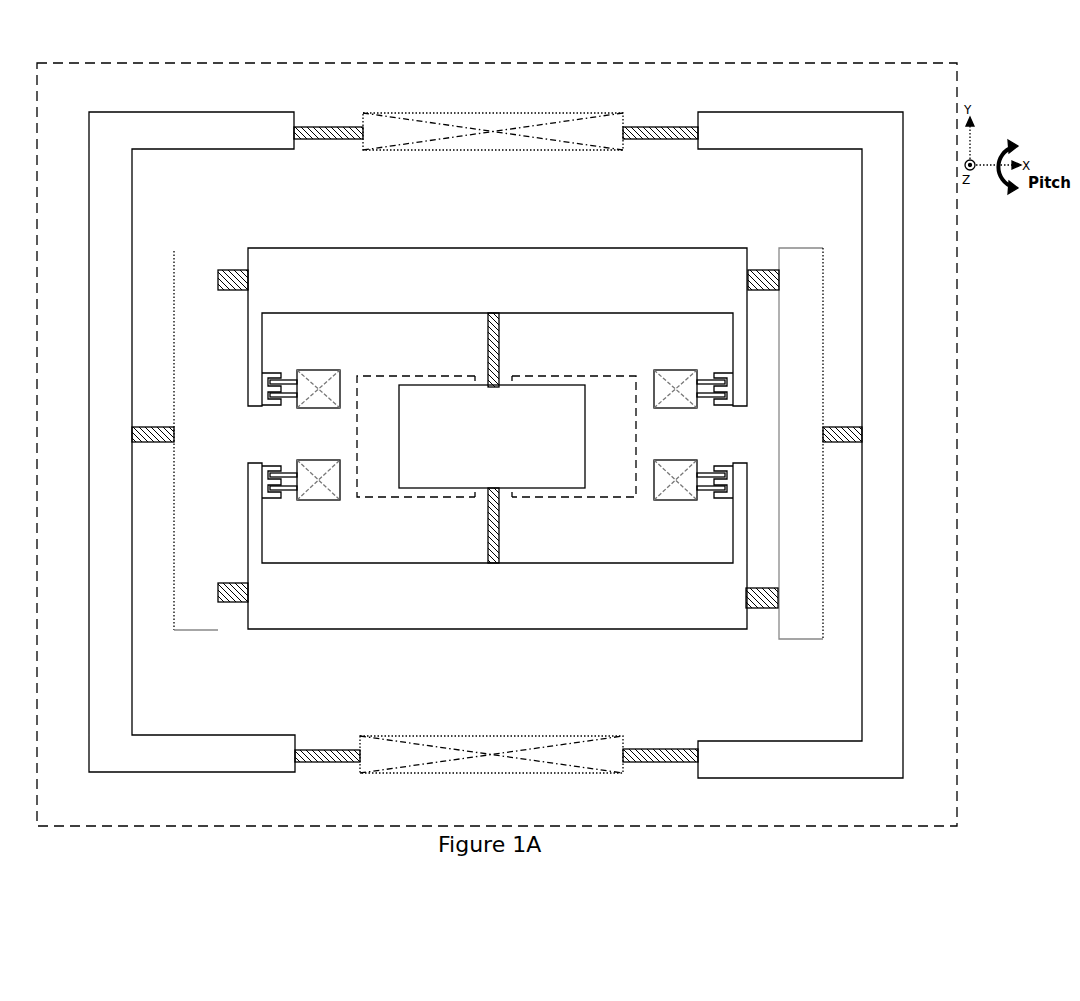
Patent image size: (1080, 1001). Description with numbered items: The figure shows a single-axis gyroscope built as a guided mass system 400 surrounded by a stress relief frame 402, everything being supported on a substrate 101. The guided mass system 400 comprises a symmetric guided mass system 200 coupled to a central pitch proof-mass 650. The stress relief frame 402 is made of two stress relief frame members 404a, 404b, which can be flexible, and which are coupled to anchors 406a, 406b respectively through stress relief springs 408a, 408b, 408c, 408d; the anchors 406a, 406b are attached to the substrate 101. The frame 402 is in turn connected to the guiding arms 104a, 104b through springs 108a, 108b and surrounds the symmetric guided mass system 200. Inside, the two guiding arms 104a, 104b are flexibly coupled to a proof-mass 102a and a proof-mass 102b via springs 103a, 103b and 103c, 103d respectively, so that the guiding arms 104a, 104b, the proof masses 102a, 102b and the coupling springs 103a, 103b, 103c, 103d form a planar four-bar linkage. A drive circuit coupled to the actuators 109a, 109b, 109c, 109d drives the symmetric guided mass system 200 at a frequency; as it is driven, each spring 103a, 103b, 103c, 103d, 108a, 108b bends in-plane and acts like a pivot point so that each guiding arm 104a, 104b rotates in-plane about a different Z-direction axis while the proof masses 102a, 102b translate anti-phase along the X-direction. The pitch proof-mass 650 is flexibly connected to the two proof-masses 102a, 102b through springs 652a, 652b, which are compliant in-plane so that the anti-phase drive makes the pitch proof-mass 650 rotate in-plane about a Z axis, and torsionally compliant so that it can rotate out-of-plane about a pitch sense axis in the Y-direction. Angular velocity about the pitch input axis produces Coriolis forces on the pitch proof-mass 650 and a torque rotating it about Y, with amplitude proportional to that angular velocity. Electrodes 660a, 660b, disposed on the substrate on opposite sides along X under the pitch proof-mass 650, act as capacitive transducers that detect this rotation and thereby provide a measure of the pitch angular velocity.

The substrate 101 is at (728, 61).
The symmetric guided mass system 200 is at (519, 405).
The guided mass system 400 is at (497, 450).
The stress relief frame 402 is at (496, 445).
The stress relief frame member 404a is at (89, 418).
The stress relief frame member 404b is at (905, 432).
The anchor 406a is at (527, 776).
The anchor 406b is at (506, 113).
The stress relief spring 408a is at (325, 763).
The stress relief spring 408b is at (658, 763).
The stress relief spring 408c is at (331, 127).
The stress relief spring 408d is at (650, 127).
The proof-mass 102a is at (497, 546).
The proof-mass 102b is at (497, 327).
The spring 103a is at (228, 604).
The spring 103b is at (765, 610).
The spring 103c is at (230, 270).
The spring 103d is at (765, 272).
The guiding arm 104a is at (172, 332).
The guiding arm 104b is at (824, 352).
The spring 108a is at (162, 427).
The spring 108b is at (834, 427).
The actuator 109a is at (322, 502).
The actuator 109b is at (676, 502).
The actuator 109c is at (316, 371).
The actuator 109d is at (672, 371).
The pitch proof-mass 650 is at (496, 436).
The spring 652a is at (502, 544).
The spring 652b is at (497, 355).
The electrode 660a is at (355, 444).
The electrode 660b is at (636, 442).